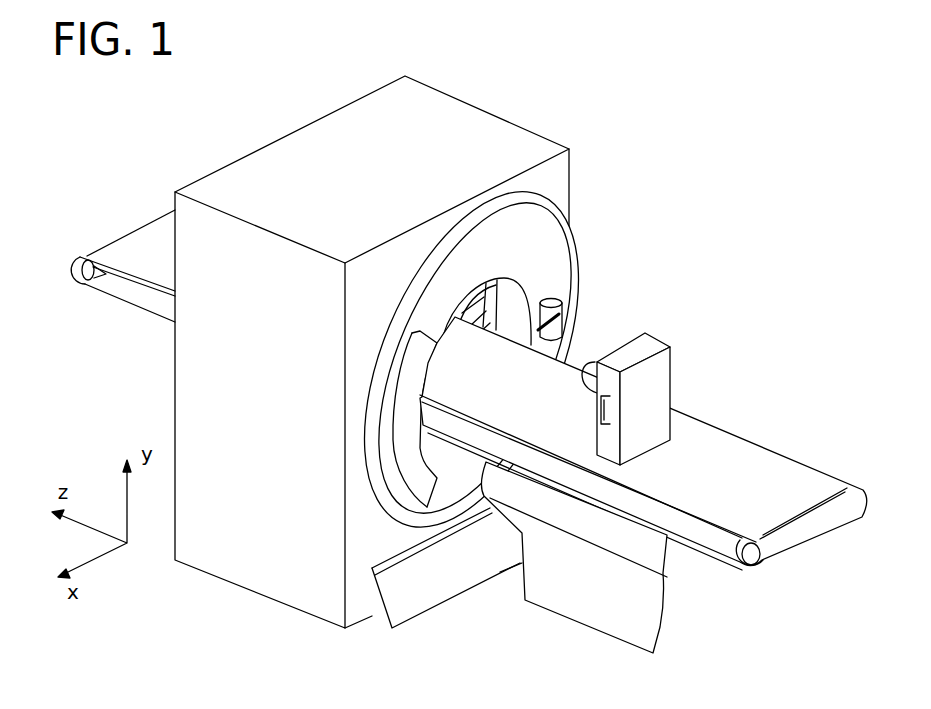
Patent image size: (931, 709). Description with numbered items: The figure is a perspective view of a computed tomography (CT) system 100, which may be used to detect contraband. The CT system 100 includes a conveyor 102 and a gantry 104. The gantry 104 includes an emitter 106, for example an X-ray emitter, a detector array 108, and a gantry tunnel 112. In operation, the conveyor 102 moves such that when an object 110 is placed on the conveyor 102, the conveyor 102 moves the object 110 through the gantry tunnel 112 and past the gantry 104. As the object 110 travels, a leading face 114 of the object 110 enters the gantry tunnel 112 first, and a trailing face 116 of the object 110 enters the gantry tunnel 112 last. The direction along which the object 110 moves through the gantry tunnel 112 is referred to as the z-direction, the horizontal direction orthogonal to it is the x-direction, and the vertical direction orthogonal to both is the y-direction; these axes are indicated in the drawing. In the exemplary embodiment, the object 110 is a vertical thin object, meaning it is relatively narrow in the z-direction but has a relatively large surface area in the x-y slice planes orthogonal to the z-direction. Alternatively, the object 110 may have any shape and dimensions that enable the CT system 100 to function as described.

The computed tomography system 100 is at (699, 255).
The conveyor 102 is at (640, 523).
The gantry 104 is at (542, 243).
The emitter 106 is at (557, 311).
The detector array 108 is at (403, 433).
The object 110 is at (686, 399).
The gantry tunnel 112 is at (505, 278).
The leading face 114 is at (585, 376).
The trailing face 116 is at (655, 418).